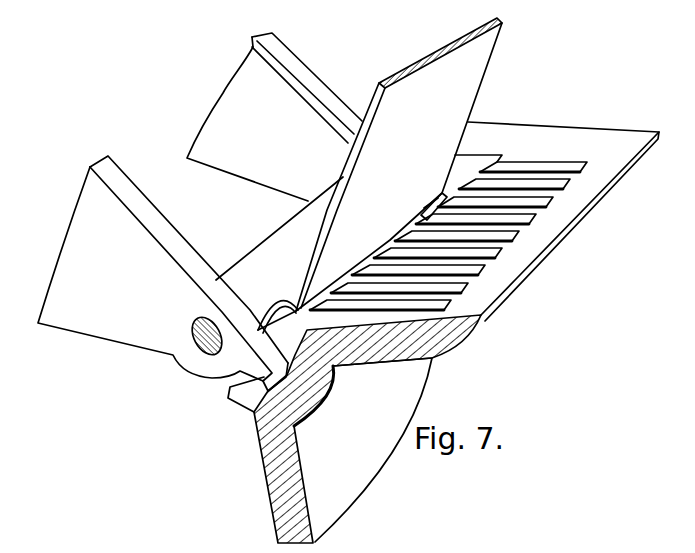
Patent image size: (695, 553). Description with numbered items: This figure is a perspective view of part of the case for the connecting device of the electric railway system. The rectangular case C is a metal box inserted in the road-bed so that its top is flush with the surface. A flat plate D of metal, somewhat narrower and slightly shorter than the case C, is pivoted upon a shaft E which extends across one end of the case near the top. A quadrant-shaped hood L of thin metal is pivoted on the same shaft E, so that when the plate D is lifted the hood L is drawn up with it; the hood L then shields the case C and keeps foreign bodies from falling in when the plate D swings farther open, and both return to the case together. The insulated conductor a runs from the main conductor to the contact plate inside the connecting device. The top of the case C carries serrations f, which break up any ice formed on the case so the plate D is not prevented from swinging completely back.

The quadrant-shaped hood L is at (163, 273).
The shaft E is at (204, 355).
The insulated conductor a is at (243, 404).
The rectangular case C is at (320, 395).
The flat plate D is at (380, 174).
The serrations f is at (533, 177).